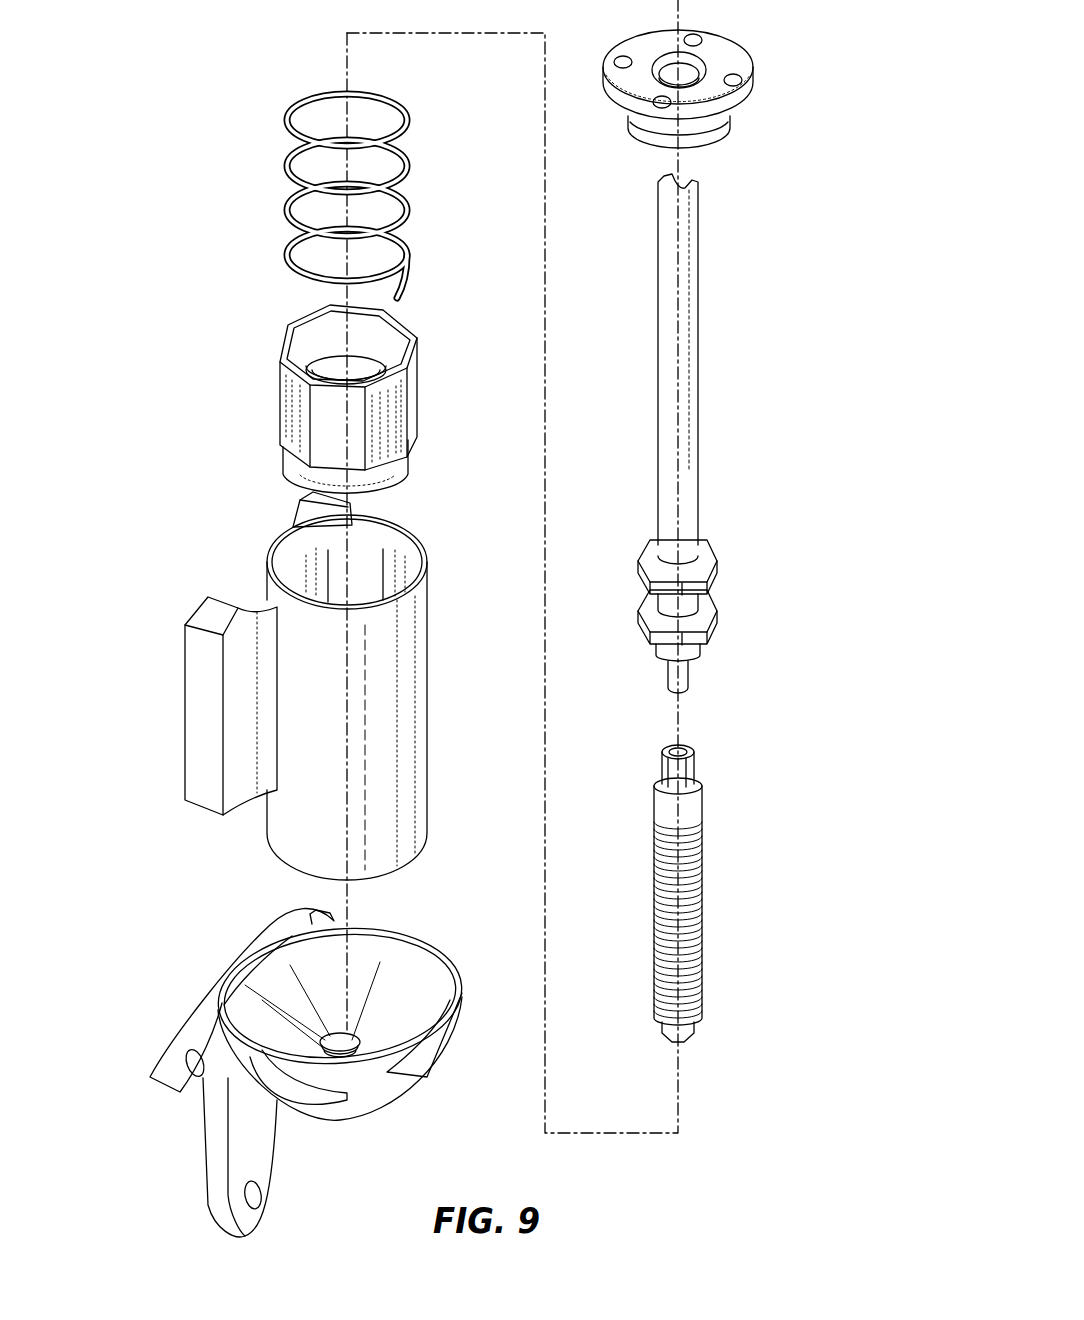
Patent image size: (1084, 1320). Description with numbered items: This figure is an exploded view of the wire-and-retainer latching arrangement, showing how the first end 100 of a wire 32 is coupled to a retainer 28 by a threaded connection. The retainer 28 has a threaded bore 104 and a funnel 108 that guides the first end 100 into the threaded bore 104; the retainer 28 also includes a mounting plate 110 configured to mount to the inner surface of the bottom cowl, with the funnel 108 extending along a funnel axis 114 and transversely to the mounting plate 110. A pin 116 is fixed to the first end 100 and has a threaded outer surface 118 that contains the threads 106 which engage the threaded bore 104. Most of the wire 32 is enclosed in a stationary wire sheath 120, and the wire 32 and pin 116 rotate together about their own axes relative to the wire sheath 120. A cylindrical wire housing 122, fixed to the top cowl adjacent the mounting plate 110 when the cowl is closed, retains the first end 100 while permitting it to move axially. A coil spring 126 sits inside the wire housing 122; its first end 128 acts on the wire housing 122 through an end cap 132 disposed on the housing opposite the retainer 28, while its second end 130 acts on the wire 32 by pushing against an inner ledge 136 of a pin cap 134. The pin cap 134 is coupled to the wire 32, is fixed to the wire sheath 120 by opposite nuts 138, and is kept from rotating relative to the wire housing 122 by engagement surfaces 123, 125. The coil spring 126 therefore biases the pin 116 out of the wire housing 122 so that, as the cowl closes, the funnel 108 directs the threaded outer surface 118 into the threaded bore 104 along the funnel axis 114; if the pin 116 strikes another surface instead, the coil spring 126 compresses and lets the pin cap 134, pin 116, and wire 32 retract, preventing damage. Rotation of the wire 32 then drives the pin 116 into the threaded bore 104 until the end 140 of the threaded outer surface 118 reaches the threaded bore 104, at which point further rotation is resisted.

The retainer 28 is at (290, 1085).
The wire 32 is at (690, 672).
The first end 100 is at (738, 526).
The threaded bore 104 is at (358, 1032).
The threads 106 is at (734, 910).
The funnel 108 is at (313, 1015).
The mounting plate 110 is at (222, 1200).
The funnel axis 114 is at (348, 921).
The pin 116 is at (690, 770).
The threaded outer surface 118 is at (710, 874).
The wire sheath 120 is at (683, 378).
The wire housing 122 is at (328, 686).
The engagement surface 123 is at (400, 430).
The engagement surface 125 is at (300, 572).
The coil spring 126 is at (345, 186).
The first end 128 is at (290, 96).
The second end 130 is at (286, 270).
The end cap 132 is at (730, 56).
The pin cap 134 is at (336, 399).
The inner ledge 136 is at (285, 357).
The nuts 138 is at (712, 545).
The end 140 is at (697, 885).